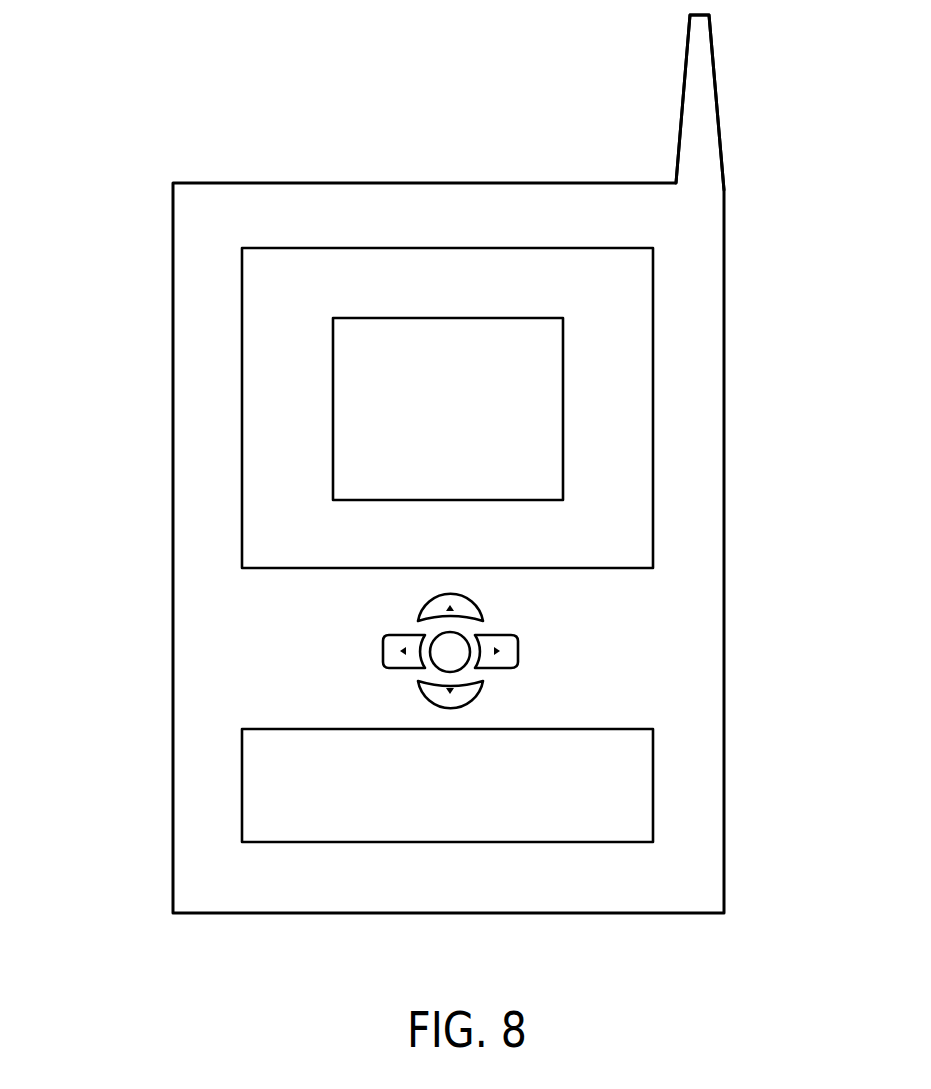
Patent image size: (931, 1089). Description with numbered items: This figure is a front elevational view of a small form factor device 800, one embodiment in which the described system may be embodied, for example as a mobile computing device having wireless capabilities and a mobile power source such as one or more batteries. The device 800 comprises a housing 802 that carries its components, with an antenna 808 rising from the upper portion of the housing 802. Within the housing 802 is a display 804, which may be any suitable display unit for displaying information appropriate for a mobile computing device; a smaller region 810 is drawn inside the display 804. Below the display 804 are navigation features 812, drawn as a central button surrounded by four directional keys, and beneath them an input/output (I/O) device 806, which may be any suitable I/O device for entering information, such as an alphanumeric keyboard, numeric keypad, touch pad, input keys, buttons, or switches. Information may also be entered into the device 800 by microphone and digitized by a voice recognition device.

The device 800 is at (170, 115).
The housing 802 is at (173, 638).
The display 804 is at (653, 307).
The input/output (I/O) device 806 is at (653, 785).
The antenna 808 is at (683, 97).
The display window 810 is at (447, 318).
The navigation features 812 is at (558, 653).